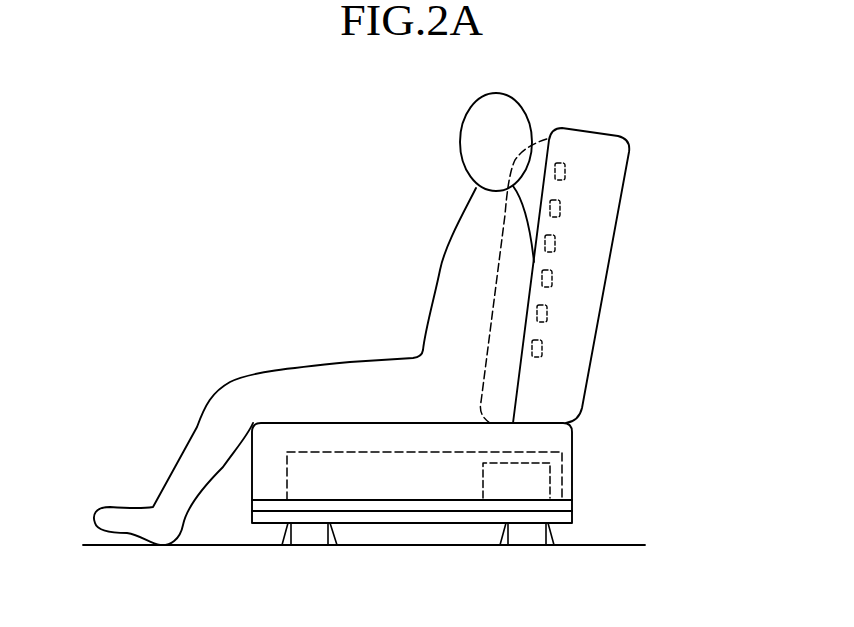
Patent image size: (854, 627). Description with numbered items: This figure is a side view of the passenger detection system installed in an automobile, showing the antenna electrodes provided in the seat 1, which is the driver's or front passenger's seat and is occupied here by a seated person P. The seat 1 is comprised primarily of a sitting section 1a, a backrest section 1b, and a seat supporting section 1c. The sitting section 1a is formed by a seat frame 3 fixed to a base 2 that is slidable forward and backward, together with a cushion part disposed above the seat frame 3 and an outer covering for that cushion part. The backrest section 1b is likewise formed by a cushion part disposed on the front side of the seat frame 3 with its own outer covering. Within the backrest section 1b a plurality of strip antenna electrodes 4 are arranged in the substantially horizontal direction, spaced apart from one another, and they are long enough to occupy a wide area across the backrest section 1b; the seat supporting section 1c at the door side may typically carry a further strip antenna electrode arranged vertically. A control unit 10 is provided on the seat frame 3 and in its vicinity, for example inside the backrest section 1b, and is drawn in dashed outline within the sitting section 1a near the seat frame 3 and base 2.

The seat 1 is at (630, 150).
The sitting section 1a is at (330, 422).
The backrest section 1b is at (540, 222).
The seat supporting section 1c is at (507, 338).
The base 2 is at (572, 507).
The seat frame 3 is at (562, 460).
The strip antenna electrodes 4 is at (562, 163).
The control unit 10 is at (507, 487).
The occupant P is at (460, 132).